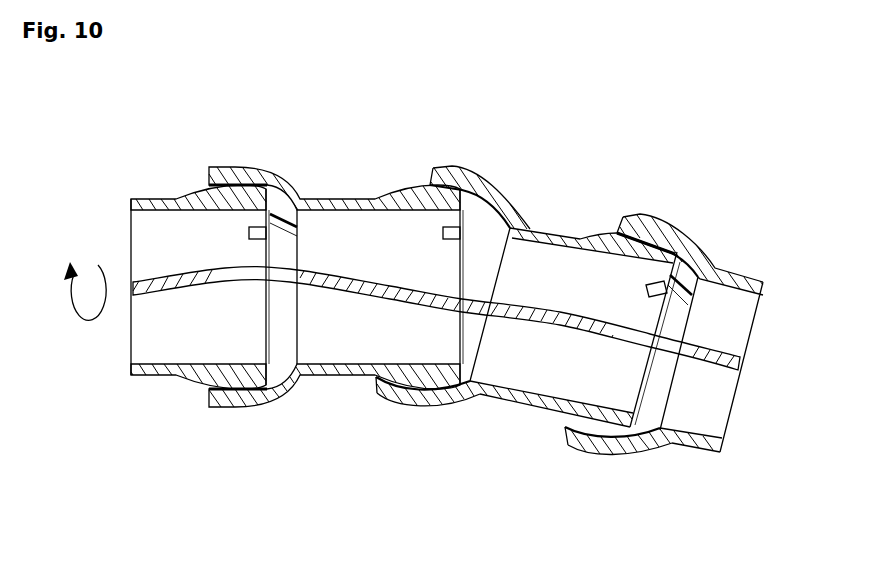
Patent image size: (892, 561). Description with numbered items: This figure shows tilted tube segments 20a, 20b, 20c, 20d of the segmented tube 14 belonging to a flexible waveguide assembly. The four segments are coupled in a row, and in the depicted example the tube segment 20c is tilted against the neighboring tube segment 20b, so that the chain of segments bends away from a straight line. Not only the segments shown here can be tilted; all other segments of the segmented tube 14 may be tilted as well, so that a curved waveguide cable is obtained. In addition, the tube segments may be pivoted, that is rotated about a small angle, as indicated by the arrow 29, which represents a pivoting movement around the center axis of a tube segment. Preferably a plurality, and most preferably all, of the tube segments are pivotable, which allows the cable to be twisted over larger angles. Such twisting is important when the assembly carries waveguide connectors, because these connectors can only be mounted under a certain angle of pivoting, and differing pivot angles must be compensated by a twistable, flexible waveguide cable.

The segmented tube 14 is at (370, 119).
The tube segment 20a is at (741, 275).
The tube segment 20b is at (568, 239).
The tube segment 20c is at (353, 198).
The tube segment 20d is at (175, 198).
The arrow 29 is at (87, 321).